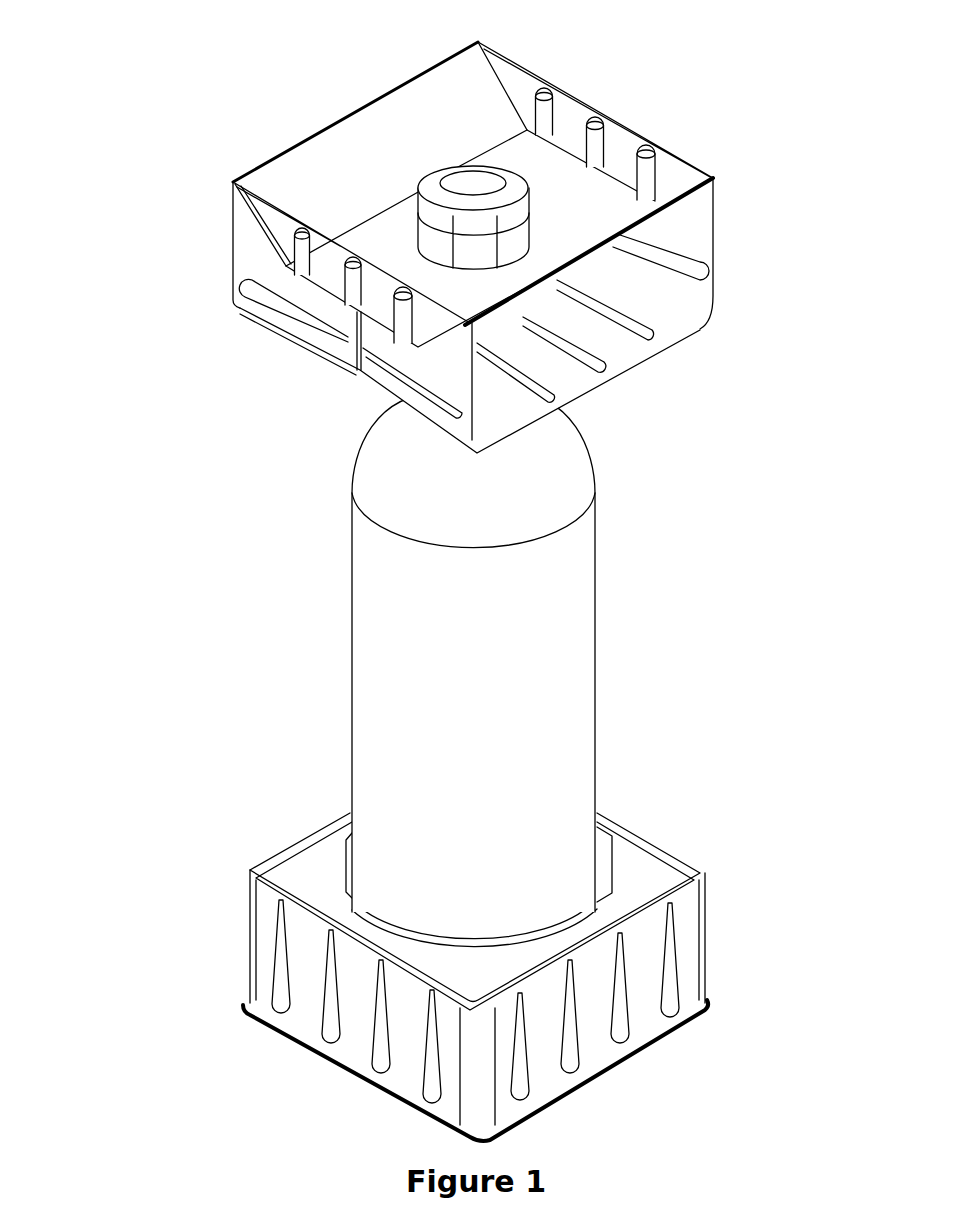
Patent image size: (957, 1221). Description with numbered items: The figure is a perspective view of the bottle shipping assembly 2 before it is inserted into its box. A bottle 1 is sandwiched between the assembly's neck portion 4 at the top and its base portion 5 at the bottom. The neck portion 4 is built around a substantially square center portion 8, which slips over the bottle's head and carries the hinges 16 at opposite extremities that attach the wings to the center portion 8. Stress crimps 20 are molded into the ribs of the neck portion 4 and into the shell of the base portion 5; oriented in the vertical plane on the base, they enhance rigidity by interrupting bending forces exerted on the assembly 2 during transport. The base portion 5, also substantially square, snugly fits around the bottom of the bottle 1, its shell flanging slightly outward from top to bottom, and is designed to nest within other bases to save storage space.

The bottle 1 is at (597, 663).
The bottle shipping assembly 2 is at (445, 585).
The neck portion 4 is at (538, 241).
The base portion 5 is at (690, 943).
The center portion 8 is at (570, 118).
The hinges 16 is at (462, 52).
The stress crimps 20 is at (647, 330).